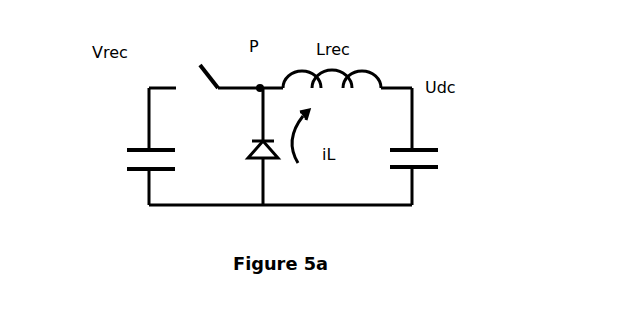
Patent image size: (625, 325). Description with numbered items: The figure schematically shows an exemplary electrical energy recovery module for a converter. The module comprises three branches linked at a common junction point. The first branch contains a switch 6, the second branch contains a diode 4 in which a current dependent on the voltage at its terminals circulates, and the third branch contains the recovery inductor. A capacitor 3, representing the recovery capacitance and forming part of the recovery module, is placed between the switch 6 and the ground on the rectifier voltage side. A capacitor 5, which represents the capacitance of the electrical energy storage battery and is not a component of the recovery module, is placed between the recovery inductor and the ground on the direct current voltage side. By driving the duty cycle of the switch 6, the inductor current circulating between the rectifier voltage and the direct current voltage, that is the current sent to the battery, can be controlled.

The capacitor 3 is at (143, 157).
The diode 4 is at (236, 166).
The capacitor 5 is at (460, 158).
The switch 6 is at (206, 61).